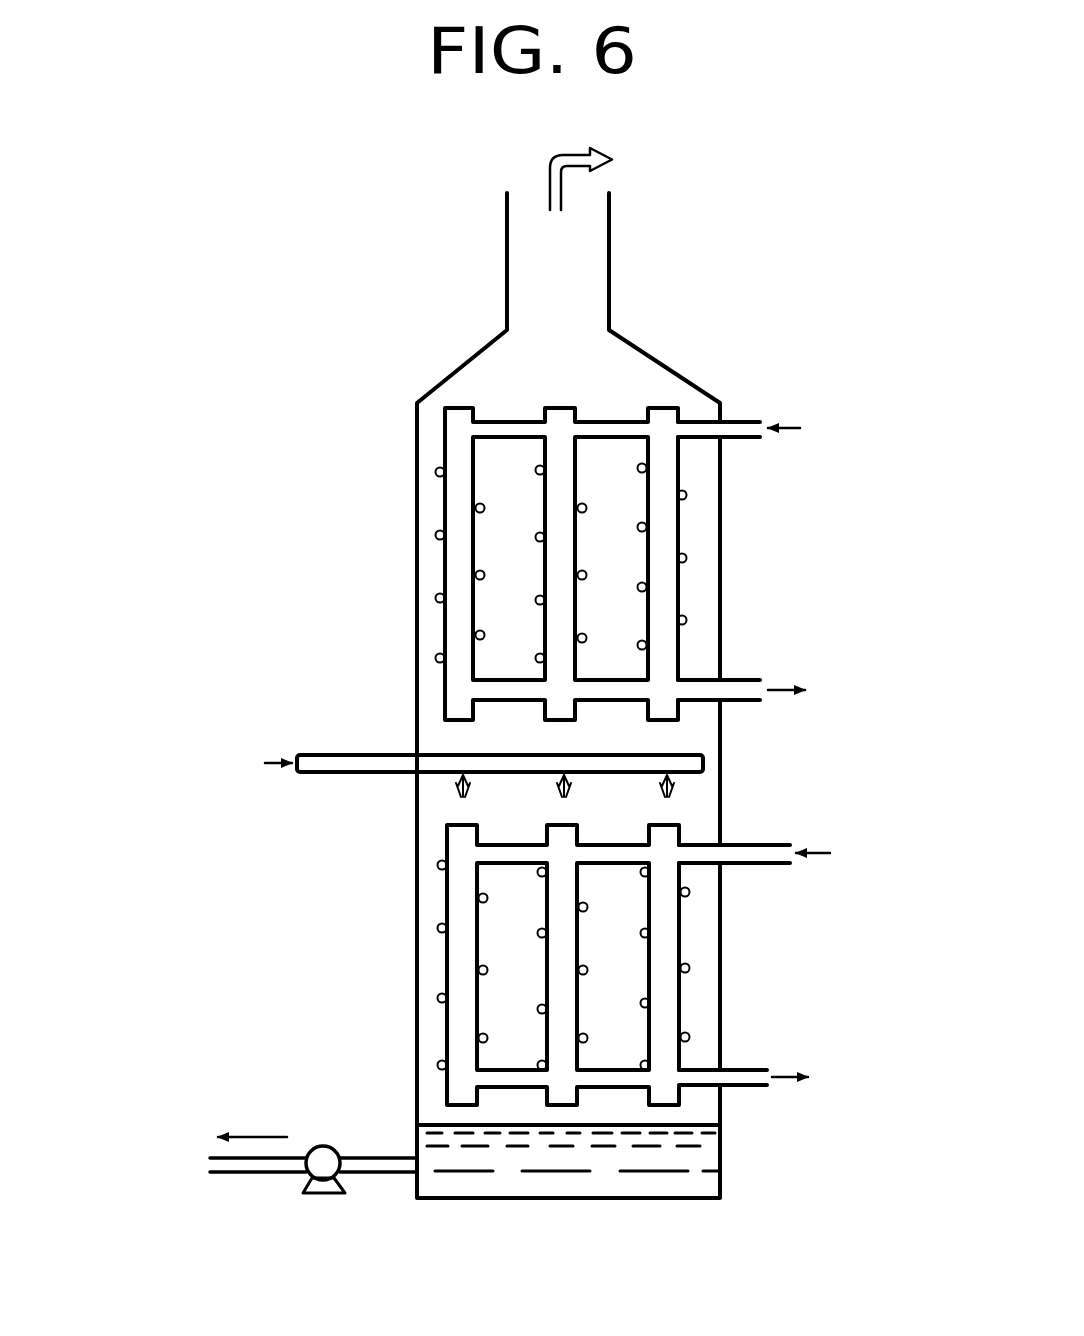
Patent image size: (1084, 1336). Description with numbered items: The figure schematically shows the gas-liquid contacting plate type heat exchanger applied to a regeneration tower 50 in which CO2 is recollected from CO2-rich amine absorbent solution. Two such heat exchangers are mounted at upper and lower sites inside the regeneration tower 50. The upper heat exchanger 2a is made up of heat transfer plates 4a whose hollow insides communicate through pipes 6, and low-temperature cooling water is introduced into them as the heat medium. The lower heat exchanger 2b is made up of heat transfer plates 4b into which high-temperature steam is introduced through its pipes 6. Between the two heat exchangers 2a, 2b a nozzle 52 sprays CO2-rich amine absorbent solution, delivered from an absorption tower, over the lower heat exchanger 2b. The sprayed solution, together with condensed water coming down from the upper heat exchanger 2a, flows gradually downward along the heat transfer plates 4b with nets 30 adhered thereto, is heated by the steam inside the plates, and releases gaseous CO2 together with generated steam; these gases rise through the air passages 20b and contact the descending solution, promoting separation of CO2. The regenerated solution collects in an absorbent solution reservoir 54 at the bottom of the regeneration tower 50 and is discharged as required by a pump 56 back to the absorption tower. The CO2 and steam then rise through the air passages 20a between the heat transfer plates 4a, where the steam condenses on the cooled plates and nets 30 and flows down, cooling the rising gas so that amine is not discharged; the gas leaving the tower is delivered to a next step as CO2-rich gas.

The regeneration tower 50 is at (653, 360).
The pipes 6 is at (703, 420).
The upper heat exchanger 2a is at (570, 526).
The lower heat exchanger 2b is at (618, 952).
The heat transfer plates 4a is at (655, 408).
The heat transfer plates 4b is at (660, 823).
The air passages 20a is at (608, 512).
The air passages 20b is at (612, 975).
The nets 30 is at (686, 621).
The nozzle 52 is at (672, 755).
The absorbent solution reservoir 54 is at (703, 1160).
The pump 56 is at (330, 1147).